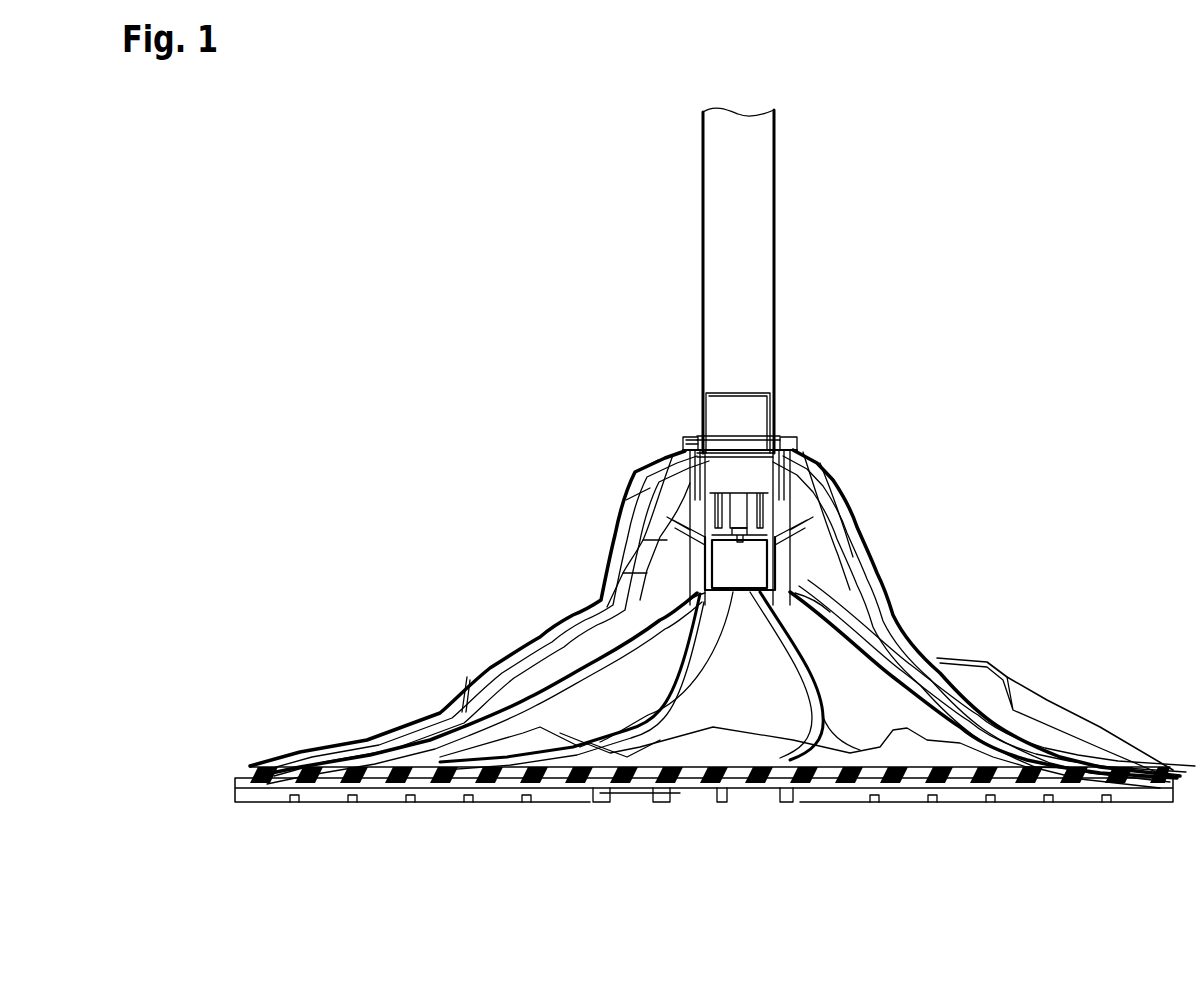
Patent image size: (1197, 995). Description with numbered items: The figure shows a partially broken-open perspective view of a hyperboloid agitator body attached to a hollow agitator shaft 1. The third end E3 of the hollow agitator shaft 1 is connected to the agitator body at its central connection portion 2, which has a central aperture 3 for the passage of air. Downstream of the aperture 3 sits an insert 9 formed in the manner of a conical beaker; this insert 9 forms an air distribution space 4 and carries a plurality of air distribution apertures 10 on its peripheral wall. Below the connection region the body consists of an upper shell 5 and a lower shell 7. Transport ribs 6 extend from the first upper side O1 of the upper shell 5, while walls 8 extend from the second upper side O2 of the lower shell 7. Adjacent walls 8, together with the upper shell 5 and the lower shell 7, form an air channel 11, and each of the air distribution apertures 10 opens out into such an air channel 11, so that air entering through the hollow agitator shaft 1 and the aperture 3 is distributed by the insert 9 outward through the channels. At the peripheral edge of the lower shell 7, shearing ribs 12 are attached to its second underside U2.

The hollow agitator shaft 1 is at (774, 250).
The connection portion 2 is at (815, 440).
The central aperture 3 is at (722, 440).
The third end E3 is at (688, 440).
The insert 9 is at (755, 465).
The air distribution apertures 10 is at (740, 497).
The air distribution space 4 is at (762, 520).
The walls 8 is at (705, 628).
The lower shell 7 is at (547, 720).
The air channel 11 is at (637, 690).
The upper shell 5 is at (880, 600).
The transport ribs 6 is at (995, 680).
The first upper side O1 is at (340, 736).
The second upper side O2 is at (853, 700).
The shearing ribs 12 is at (482, 803).
The second underside U2 is at (636, 803).